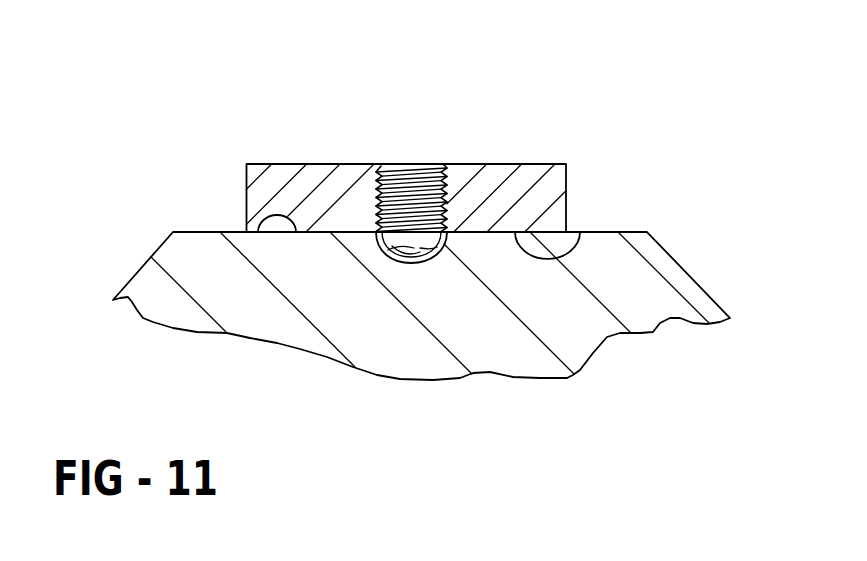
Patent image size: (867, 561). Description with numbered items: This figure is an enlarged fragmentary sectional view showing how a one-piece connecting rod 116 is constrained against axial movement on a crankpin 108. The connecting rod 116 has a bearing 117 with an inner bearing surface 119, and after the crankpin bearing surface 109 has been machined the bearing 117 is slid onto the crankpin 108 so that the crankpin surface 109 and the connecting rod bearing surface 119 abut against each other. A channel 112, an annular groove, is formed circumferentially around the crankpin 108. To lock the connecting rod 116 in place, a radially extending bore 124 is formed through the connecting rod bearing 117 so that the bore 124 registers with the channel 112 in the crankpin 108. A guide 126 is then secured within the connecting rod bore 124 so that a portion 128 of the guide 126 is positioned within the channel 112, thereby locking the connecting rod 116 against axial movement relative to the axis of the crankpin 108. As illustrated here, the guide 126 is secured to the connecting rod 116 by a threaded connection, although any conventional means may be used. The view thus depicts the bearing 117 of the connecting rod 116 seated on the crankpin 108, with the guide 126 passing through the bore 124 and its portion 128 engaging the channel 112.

The crankpin 108 is at (643, 312).
The crankpin bearing surface 109 is at (258, 232).
The channel 112 is at (386, 253).
The connecting rod 116 is at (278, 164).
The bearing 117 is at (537, 173).
The inner bearing surface 119 is at (566, 258).
The bore 124 is at (445, 170).
The guide 126 is at (403, 173).
The portion of the guide 128 is at (437, 247).